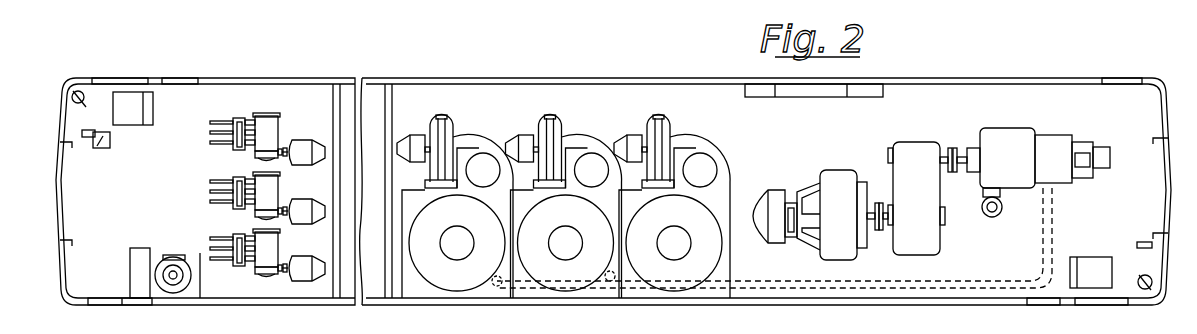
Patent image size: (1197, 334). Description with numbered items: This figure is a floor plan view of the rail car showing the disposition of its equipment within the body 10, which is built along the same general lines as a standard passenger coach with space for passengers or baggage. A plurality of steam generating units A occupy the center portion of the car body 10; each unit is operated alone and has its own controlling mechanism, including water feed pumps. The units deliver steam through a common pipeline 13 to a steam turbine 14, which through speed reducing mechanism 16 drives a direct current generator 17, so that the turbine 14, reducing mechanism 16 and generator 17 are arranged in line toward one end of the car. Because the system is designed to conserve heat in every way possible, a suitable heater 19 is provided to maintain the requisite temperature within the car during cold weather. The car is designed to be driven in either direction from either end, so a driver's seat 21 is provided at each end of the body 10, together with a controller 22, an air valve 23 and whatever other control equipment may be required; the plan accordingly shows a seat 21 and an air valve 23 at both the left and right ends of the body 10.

The body 10 is at (682, 78).
The common pipeline 13 is at (285, 132).
The steam turbine 14 is at (1040, 115).
The speed reducing mechanism 16 is at (913, 148).
The direct current generator 17 is at (840, 180).
The heater 19 is at (168, 256).
The driver's seat 21 is at (137, 115).
The controller 22 is at (1143, 242).
The air valve 23 is at (72, 100).
The steam generating units A is at (482, 135).